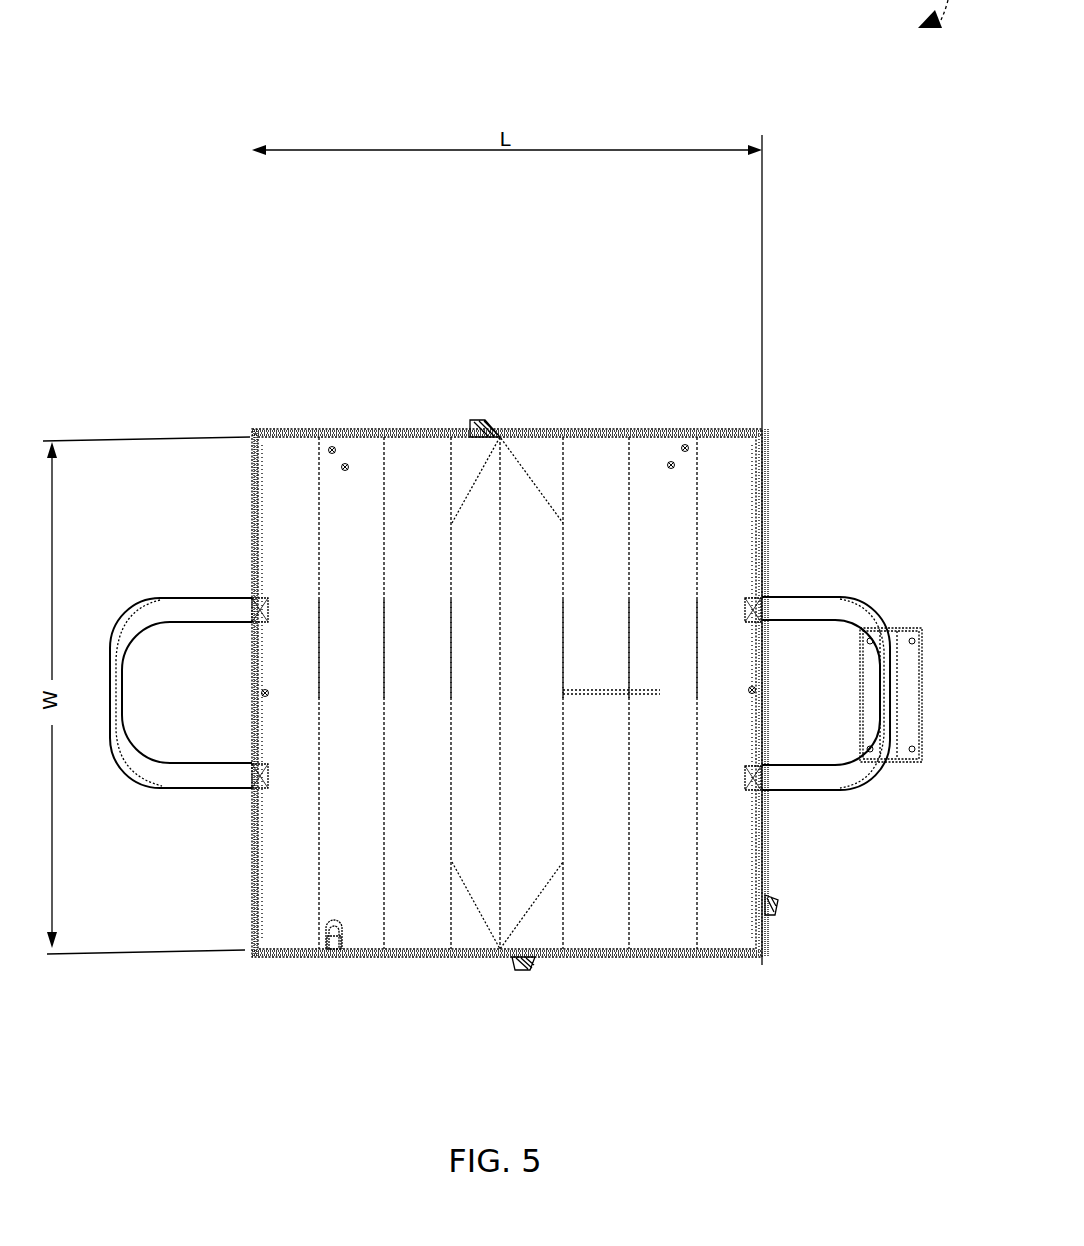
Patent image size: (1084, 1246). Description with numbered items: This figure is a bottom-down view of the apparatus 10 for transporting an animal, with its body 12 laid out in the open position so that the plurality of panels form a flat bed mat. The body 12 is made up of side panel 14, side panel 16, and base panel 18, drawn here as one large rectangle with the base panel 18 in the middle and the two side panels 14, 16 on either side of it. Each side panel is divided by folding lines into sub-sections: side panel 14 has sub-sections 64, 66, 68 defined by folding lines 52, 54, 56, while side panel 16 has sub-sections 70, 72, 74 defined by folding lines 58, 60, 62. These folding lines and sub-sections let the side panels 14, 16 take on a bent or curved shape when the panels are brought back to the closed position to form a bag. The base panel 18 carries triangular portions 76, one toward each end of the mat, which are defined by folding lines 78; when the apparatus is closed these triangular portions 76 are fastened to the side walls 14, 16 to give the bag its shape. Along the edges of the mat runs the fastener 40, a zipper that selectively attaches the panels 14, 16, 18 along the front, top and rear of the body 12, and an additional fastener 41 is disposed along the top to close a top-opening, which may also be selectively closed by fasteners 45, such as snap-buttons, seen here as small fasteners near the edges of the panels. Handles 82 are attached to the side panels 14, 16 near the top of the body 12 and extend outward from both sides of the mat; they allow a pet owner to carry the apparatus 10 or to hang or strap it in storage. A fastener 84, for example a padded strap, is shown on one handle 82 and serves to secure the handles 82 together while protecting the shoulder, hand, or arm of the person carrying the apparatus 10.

The apparatus 10 is at (116, 66).
The body 12 is at (932, 160).
The side panel 14 is at (703, 295).
The side panel 16 is at (328, 322).
The base panel 18 is at (518, 305).
The fastener 40 is at (409, 426).
The additional fastener 41 is at (252, 580).
The fastener 45 is at (266, 692).
The folding line 52 is at (698, 620).
The folding line 54 is at (630, 622).
The folding line 56 is at (563, 640).
The folding line 58 is at (452, 641).
The folding line 60 is at (385, 655).
The folding line 62 is at (320, 662).
The sub-section 64 is at (711, 738).
The sub-section 66 is at (651, 760).
The sub-section 68 is at (581, 755).
The sub-section 70 is at (401, 719).
The sub-section 72 is at (340, 723).
The sub-section 74 is at (279, 723).
The triangular portion 76 is at (512, 545).
The folding line 78 is at (547, 502).
The handle 82 is at (117, 648).
The fastener 84 is at (908, 688).